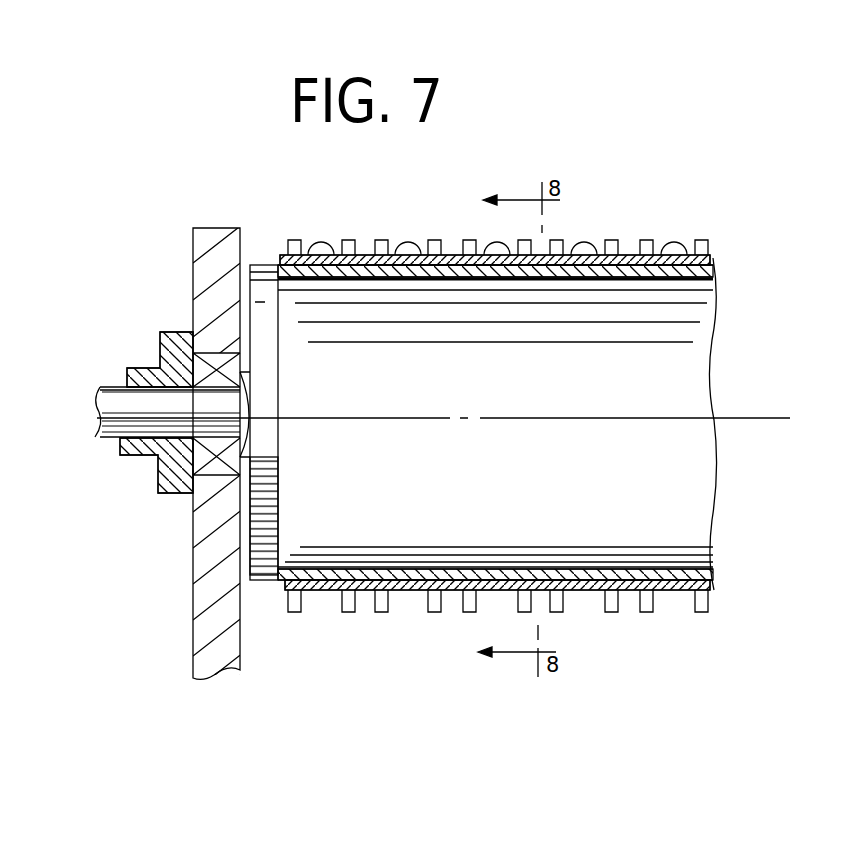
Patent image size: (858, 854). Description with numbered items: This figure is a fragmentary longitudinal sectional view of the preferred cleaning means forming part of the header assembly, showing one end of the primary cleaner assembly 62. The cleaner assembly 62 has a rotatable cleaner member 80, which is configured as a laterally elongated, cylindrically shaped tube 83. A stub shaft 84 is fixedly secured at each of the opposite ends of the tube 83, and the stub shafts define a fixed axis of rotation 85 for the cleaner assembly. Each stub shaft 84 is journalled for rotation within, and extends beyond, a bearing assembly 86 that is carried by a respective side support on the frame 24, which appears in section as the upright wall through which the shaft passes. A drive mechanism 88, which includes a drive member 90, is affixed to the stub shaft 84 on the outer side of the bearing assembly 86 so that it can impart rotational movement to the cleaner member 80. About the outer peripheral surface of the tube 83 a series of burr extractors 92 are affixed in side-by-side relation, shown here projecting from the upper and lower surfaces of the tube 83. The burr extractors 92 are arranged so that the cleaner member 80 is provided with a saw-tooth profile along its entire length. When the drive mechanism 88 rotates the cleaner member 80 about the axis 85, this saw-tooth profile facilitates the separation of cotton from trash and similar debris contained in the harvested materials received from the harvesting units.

The frame 24 is at (222, 228).
The primary cleaner assembly 62 is at (512, 411).
The cleaner member 80 is at (716, 270).
The tube 83 is at (635, 277).
The stub shaft 84 is at (225, 402).
The axis of rotation 85 is at (727, 418).
The bearing assembly 86 is at (220, 455).
The drive mechanism 88 is at (143, 356).
The drive member 90 is at (178, 478).
The burr extractors 92 is at (348, 240).